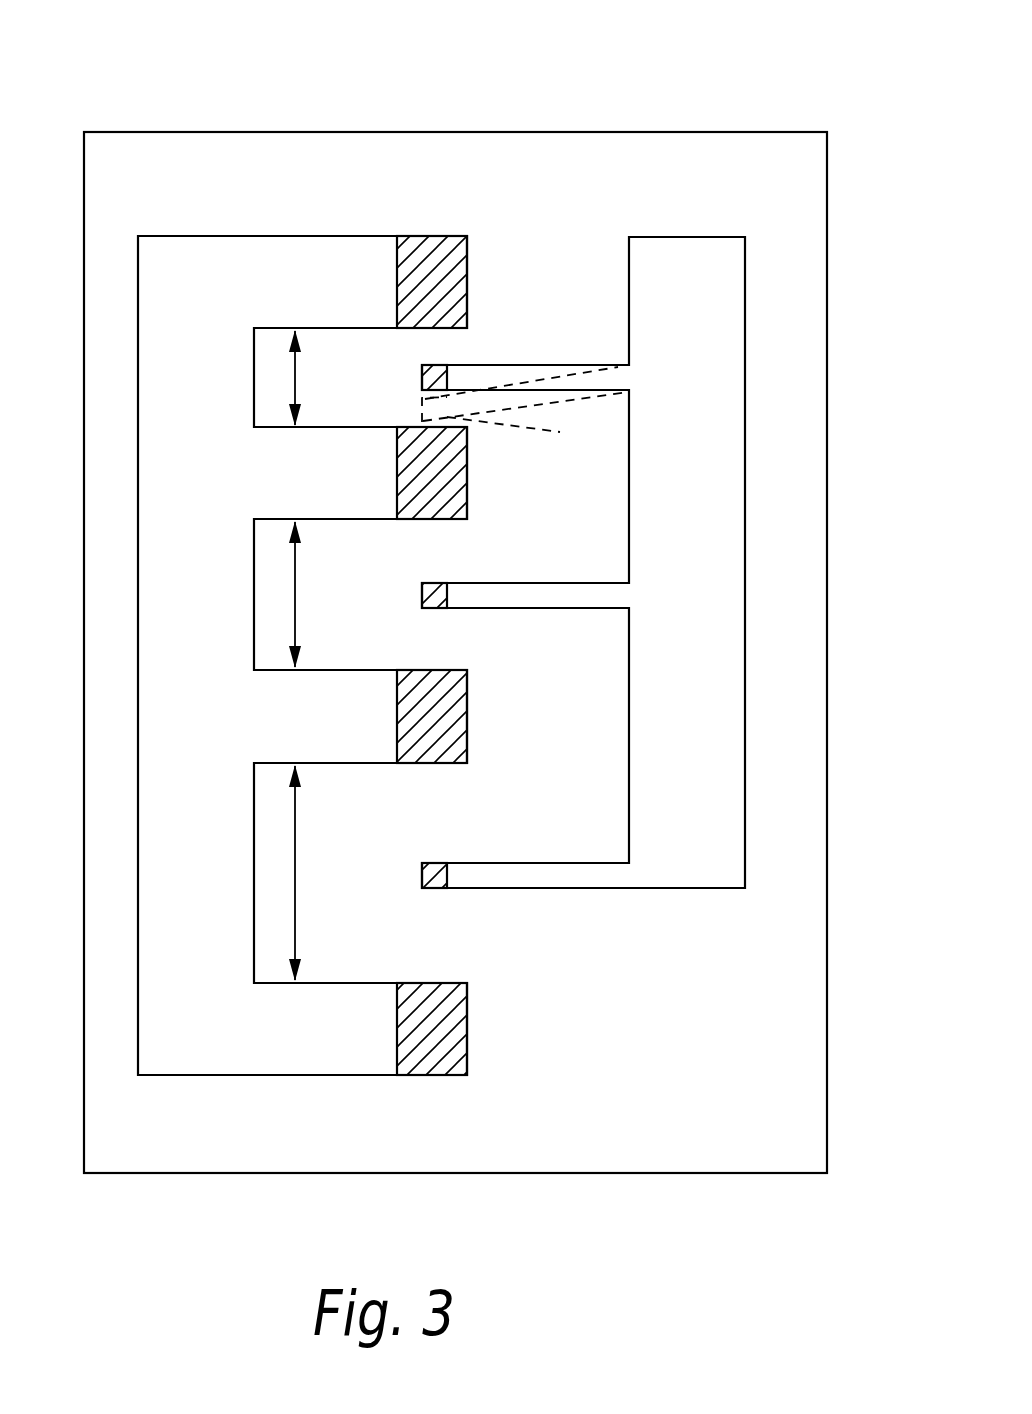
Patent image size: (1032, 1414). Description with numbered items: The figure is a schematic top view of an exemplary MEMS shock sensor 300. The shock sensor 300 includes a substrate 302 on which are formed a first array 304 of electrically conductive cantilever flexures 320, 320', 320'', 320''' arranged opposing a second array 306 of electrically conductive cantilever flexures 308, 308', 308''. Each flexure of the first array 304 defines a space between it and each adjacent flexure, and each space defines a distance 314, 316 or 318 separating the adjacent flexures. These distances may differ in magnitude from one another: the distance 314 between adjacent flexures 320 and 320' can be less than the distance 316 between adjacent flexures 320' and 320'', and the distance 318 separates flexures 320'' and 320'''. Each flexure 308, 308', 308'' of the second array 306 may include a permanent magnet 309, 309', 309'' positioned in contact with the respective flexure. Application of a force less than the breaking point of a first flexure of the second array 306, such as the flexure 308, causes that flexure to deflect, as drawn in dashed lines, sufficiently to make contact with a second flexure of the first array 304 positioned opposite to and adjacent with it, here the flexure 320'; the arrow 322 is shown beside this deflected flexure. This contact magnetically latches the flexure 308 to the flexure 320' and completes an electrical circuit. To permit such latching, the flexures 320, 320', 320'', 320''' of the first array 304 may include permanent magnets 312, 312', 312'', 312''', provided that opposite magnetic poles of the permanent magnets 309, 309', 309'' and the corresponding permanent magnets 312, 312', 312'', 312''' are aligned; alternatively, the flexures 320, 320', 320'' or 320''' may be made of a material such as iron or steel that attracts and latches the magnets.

The MEMS shock sensor 300 is at (750, 75).
The substrate 302 is at (155, 132).
The first array 304 is at (203, 1063).
The second array 306 is at (690, 877).
The flexure 308 is at (525, 424).
The flexure 308' is at (525, 632).
The flexure 308'' is at (583, 915).
The permanent magnet 309 is at (483, 348).
The permanent magnet 309' is at (483, 566).
The permanent magnet 309'' is at (487, 845).
The permanent magnet 312 is at (471, 280).
The permanent magnet 312' is at (481, 474).
The permanent magnet 312'' is at (482, 716).
The permanent magnet 312''' is at (486, 1032).
The distance 314 is at (297, 387).
The distance 316 is at (297, 568).
The distance 318 is at (297, 812).
The flexure 320 is at (325, 282).
The flexure 320' is at (325, 473).
The flexure 320'' is at (325, 716).
The flexure 320''' is at (325, 1029).
The deflection direction 322 is at (395, 404).